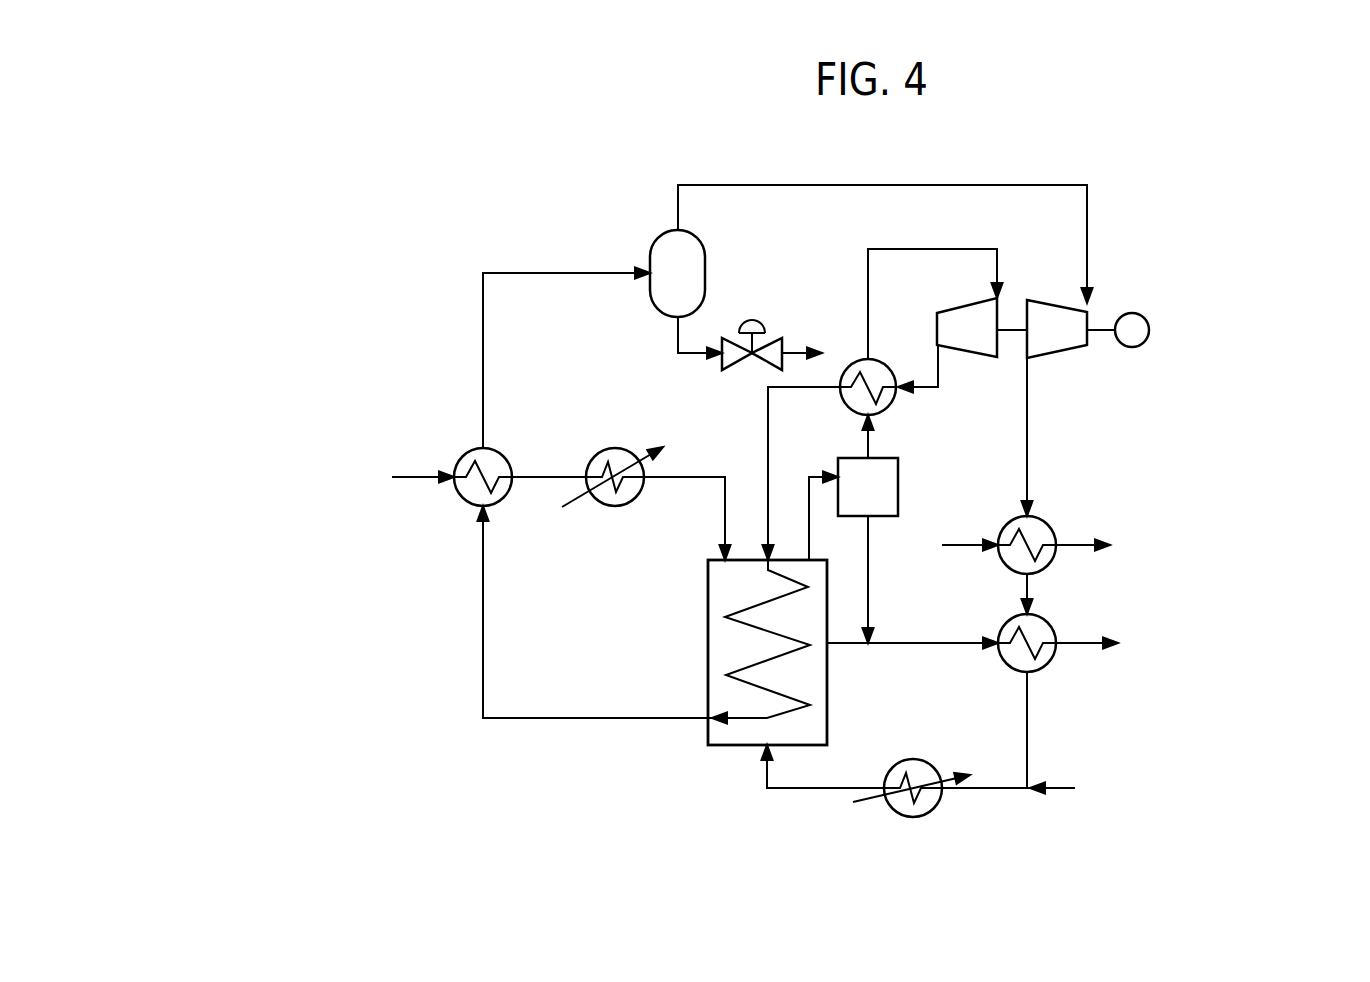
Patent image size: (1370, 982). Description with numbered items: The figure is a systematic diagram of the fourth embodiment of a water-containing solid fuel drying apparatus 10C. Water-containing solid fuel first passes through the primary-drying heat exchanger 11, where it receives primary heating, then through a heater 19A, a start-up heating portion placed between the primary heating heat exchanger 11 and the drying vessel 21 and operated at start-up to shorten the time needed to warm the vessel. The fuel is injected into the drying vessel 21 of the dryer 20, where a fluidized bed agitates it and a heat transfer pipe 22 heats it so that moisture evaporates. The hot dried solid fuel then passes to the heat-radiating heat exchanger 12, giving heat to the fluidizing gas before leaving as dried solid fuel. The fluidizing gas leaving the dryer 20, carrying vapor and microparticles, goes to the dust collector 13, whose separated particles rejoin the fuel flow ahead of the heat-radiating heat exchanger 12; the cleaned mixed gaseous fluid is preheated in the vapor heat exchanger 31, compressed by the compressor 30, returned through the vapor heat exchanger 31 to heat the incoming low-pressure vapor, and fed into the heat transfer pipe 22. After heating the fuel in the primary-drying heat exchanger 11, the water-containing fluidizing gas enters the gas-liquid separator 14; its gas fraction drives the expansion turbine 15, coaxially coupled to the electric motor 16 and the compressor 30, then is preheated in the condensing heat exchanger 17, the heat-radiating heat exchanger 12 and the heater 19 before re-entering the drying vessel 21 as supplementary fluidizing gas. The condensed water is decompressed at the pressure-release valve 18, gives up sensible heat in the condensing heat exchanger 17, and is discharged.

The drying apparatus 10C is at (1158, 128).
The primary-drying heat exchanger 11 is at (462, 453).
The heat-radiating heat exchanger 12 is at (1050, 621).
The dust collector 13 is at (898, 478).
The gas-liquid separator 14 is at (703, 248).
The expansion turbine 15 is at (1057, 302).
The electric motor 16 is at (1148, 318).
The condensing heat exchanger 17 is at (1050, 524).
The pressure-release valve 18 is at (778, 338).
The heater 19 is at (913, 818).
The heater 19A is at (595, 452).
The dryer 20 is at (754, 694).
The drying vessel 21 is at (708, 615).
The heat transfer pipe 22 is at (785, 655).
The compressor 30 is at (967, 357).
The vapor heat exchanger 31 is at (887, 359).